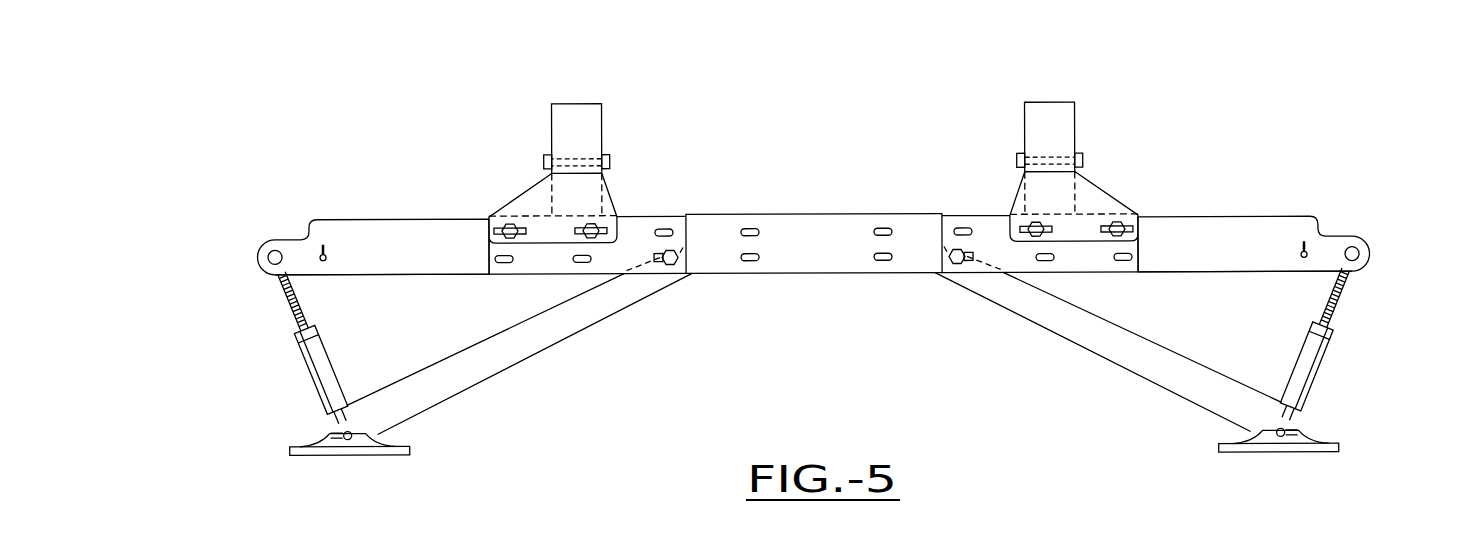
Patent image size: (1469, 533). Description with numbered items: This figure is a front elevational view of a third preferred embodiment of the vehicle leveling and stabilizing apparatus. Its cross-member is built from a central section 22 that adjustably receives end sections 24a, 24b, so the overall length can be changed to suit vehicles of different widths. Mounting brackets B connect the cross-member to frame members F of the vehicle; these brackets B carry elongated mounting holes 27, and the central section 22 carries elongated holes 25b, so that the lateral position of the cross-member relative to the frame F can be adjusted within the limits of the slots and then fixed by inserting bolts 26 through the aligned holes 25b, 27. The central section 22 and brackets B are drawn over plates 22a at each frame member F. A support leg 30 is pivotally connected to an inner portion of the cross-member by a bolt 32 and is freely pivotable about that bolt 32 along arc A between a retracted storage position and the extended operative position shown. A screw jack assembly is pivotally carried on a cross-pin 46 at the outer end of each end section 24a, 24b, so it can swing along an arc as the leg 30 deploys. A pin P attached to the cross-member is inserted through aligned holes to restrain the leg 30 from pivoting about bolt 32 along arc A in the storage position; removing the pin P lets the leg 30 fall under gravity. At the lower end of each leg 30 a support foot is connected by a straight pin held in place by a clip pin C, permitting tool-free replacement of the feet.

The central section 22 is at (882, 214).
The post mounting bracket plate 22a is at (1110, 197).
The end section 24a is at (381, 218).
The end section 24b is at (1277, 218).
The elongated holes 25b is at (750, 228).
The bolts 26 is at (1030, 227).
The elongated mounting holes 27 is at (1052, 232).
The support leg 30 is at (1112, 363).
The bolt 32 is at (958, 263).
The cross-pin 46 is at (1357, 252).
The frame F is at (1063, 103).
The pin P is at (1303, 265).
The arc A is at (1164, 335).
The brackets B is at (1246, 306).
The clip pin C is at (1240, 444).